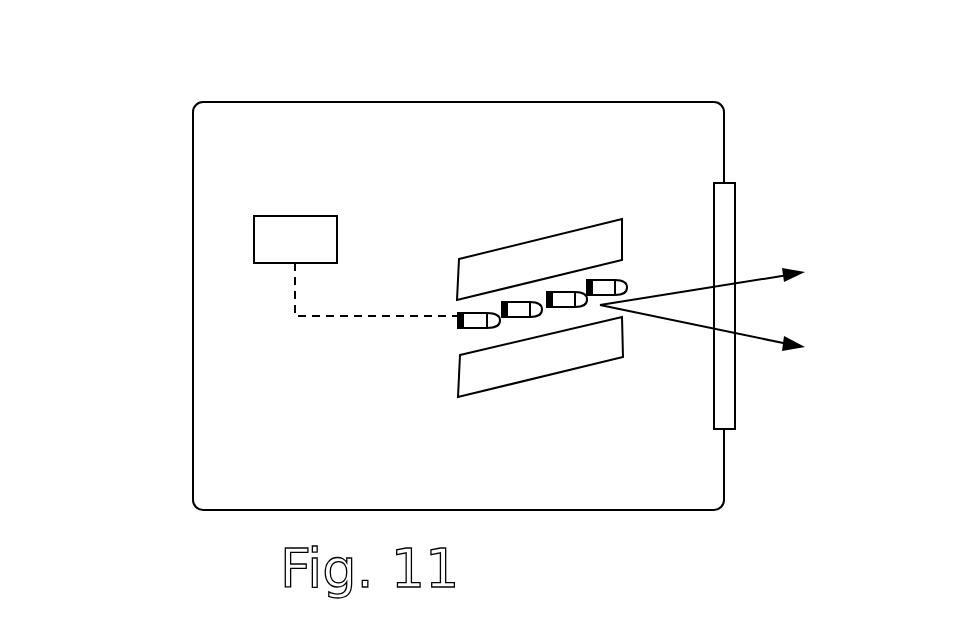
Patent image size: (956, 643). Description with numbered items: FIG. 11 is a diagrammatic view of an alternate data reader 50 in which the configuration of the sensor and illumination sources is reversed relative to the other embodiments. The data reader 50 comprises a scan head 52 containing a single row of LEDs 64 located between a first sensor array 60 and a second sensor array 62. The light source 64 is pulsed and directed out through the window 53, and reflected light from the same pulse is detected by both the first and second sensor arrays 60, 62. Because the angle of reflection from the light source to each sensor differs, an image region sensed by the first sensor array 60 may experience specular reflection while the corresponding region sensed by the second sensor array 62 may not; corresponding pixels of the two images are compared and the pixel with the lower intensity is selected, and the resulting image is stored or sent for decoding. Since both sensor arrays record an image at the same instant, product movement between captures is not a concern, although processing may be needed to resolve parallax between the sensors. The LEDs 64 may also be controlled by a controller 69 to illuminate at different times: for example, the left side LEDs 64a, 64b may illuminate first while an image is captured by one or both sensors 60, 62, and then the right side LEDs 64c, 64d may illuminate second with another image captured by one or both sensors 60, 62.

The data reader 50 is at (140, 107).
The scan head 52 is at (193, 398).
The window 53 is at (735, 222).
The first sensor array 60 is at (495, 388).
The second sensor array 62 is at (592, 226).
The LEDs 64 is at (548, 264).
The left side LED 64a is at (470, 327).
The left side LED 64b is at (530, 317).
The right side LED 64c is at (547, 292).
The right side LED 64d is at (615, 278).
The controller 69 is at (254, 235).